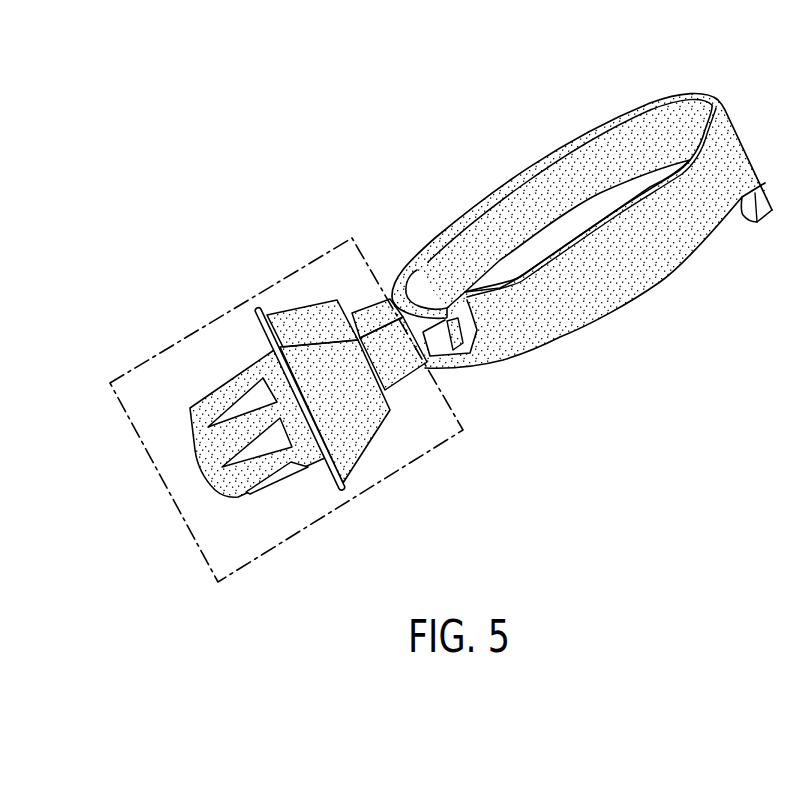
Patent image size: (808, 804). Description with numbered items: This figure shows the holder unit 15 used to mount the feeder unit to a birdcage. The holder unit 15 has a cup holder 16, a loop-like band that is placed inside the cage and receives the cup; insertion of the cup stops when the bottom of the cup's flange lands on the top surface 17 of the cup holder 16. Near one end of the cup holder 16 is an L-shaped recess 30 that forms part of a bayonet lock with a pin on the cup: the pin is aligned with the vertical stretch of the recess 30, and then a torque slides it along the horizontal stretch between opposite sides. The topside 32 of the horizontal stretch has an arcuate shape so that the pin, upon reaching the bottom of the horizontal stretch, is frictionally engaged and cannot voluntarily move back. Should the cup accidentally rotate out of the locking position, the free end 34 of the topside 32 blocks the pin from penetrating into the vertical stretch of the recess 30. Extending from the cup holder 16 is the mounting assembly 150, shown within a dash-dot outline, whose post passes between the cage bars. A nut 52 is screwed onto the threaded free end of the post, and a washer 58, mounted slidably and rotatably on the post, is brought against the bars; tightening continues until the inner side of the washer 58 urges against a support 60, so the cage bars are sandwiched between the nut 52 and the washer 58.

The holder unit 15 is at (571, 247).
The cup holder 16 is at (498, 193).
The top surface 17 is at (581, 131).
The L-shaped recess 30 is at (460, 337).
The topside 32 is at (418, 306).
The free end 34 is at (448, 313).
The nut 52 is at (228, 393).
The washer 58 is at (333, 477).
The support 60 is at (355, 398).
The mounting assembly 150 is at (430, 457).